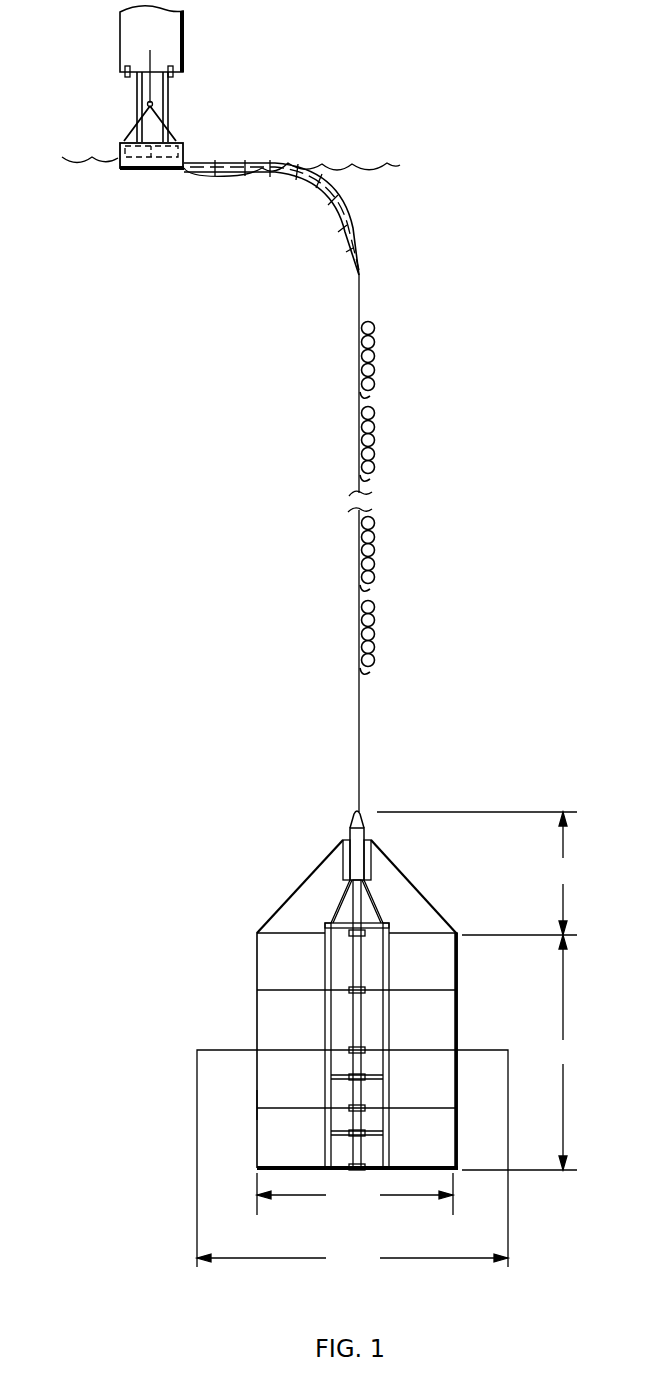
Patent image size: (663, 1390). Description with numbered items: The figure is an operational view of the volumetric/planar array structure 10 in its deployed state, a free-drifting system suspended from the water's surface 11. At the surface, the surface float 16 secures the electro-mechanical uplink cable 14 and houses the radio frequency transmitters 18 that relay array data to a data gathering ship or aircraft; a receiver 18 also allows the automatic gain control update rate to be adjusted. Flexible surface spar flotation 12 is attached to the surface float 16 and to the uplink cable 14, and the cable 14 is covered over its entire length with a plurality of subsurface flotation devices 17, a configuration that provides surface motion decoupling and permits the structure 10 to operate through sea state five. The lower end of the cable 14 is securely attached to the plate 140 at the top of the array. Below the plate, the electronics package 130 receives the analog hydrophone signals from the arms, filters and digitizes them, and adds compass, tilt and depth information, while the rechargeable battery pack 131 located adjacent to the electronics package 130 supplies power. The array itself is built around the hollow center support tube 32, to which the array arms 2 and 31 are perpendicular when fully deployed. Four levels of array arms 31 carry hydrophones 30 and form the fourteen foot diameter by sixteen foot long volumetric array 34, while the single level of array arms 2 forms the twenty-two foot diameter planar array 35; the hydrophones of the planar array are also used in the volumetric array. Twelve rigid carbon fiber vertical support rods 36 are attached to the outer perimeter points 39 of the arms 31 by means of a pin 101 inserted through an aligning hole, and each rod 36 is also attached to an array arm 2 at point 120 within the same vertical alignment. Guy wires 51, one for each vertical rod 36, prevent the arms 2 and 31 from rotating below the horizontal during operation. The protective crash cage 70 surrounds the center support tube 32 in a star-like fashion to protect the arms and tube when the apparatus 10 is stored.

The array arms 2 is at (303, 1050).
The volumetric/planar array structure 10 is at (142, 755).
The water's surface 11 is at (406, 162).
The flexible surface spar flotation 12 is at (356, 223).
The electro-mechanical uplink cable 14 is at (361, 718).
The surface float 16 is at (161, 170).
The subsurface flotation devices 17 is at (374, 532).
The transmitters 18 is at (112, 151).
The hydrophones 30 is at (297, 928).
The array arms 31 is at (408, 933).
The center support tube 32 is at (364, 966).
The volumetric array 34 is at (420, 1197).
The planar array 35 is at (407, 1259).
The vertical support rods 36 is at (256, 1146).
The outer perimeter points 39 is at (272, 1109).
The guy wire 51 is at (406, 868).
The protective crash cage 70 is at (388, 1025).
The pin 101 is at (256, 1104).
The point 120 is at (256, 1049).
The electronics package 130 is at (366, 853).
The rechargeable battery pack 131 is at (347, 866).
The plate 140 is at (352, 826).